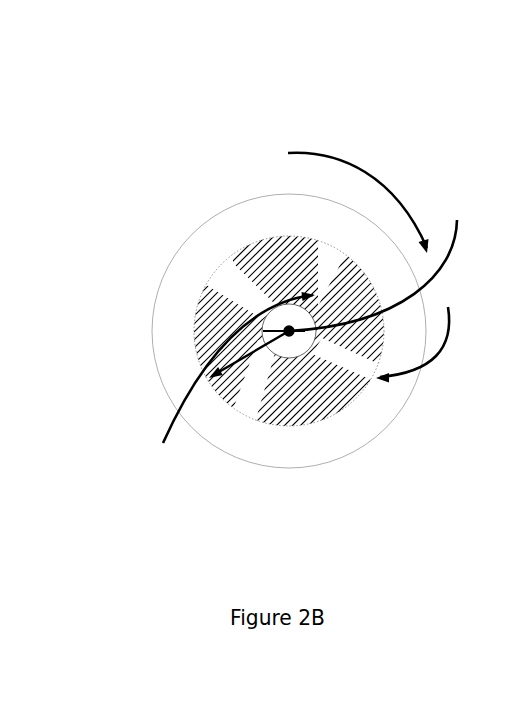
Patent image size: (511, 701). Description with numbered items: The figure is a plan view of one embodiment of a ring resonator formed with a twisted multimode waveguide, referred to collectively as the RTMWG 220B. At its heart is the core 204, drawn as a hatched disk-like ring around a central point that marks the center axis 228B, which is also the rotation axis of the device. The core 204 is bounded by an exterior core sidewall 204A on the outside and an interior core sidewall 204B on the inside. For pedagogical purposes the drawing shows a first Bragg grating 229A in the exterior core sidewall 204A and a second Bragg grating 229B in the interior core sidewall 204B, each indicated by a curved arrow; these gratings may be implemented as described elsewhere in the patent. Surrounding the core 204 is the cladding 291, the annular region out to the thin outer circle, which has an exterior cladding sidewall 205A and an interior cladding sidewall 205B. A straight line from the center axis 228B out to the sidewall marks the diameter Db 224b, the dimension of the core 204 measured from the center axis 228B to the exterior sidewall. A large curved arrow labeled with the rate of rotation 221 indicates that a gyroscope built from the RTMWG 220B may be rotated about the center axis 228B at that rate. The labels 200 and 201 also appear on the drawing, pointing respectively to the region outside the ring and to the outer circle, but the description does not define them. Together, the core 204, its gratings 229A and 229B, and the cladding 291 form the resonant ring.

The ring twisted multimode waveguide (RTMWG) 220B is at (333, 58).
The rate of rotation (Ω) 221 is at (386, 176).
The outer circle 201 is at (269, 331).
The diameter Db 224b is at (248, 413).
The center axis 228B is at (292, 341).
The interior cladding sidewall 205B is at (375, 263).
The exterior cladding sidewall 205A is at (325, 462).
The first Bragg grating 229A is at (430, 332).
The second Bragg grating 229B is at (220, 383).
The diameter Db is at (230, 367).
The cladding 291 is at (222, 232).
The outer region 200 is at (140, 317).
The core 204 is at (250, 247).
The interior core sidewall 204B is at (288, 293).
The exterior core sidewall 204A is at (320, 420).